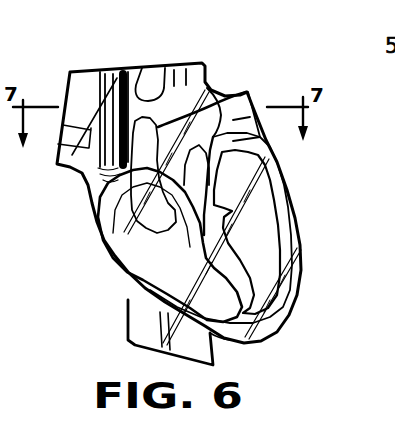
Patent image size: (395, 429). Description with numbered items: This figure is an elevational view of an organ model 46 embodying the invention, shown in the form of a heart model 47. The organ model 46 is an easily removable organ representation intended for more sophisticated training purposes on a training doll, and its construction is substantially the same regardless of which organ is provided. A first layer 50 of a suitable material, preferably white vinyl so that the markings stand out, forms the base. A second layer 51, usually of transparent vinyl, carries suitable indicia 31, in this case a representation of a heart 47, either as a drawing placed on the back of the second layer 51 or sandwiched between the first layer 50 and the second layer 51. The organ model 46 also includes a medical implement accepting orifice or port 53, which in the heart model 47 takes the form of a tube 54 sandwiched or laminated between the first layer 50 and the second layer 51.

The organ model 46 is at (247, 98).
The port 53 is at (113, 72).
The tube 54 is at (143, 68).
The second layer 51 is at (268, 229).
The heart model 47 is at (302, 282).
The indicia 31 is at (158, 258).
The first layer 50 is at (384, 136).